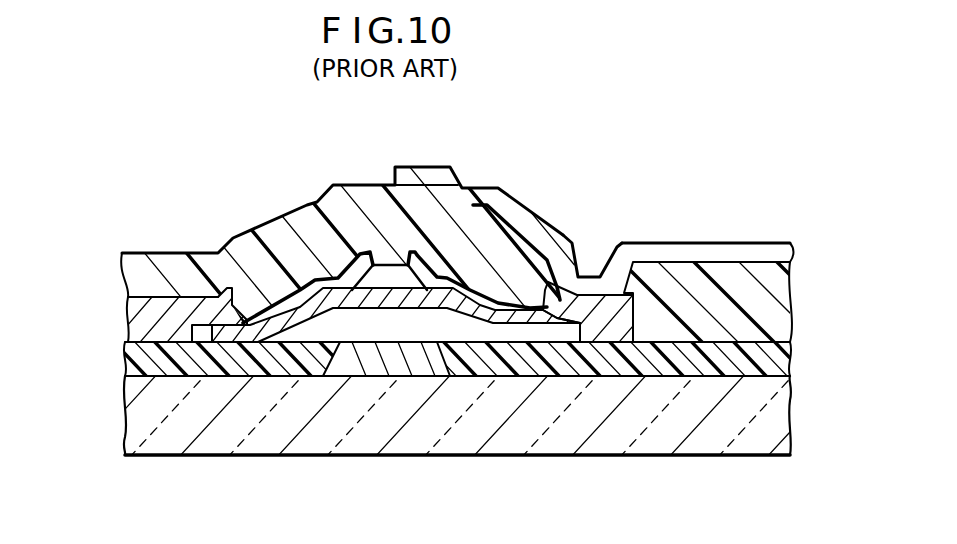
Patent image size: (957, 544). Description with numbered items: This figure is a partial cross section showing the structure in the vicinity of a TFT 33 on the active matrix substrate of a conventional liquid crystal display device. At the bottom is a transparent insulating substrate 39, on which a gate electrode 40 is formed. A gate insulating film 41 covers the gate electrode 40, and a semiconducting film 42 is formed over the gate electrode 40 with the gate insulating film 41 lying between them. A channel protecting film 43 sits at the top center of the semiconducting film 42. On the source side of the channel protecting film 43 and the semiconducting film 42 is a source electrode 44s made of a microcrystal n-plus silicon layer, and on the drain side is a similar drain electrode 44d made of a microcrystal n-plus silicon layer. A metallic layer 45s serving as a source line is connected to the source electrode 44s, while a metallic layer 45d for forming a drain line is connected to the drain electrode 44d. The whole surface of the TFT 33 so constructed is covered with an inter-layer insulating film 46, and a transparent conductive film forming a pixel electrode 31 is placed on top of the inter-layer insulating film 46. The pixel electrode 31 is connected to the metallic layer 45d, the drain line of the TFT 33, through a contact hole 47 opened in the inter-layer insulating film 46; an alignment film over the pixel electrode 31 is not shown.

The pixel electrode 31 is at (723, 250).
The TFT 33 is at (313, 190).
The transparent insulating substrate 39 is at (770, 427).
The gate electrode 40 is at (392, 350).
The gate insulating film 41 is at (790, 355).
The semiconducting film 42 is at (277, 297).
The channel protecting film 43 is at (382, 272).
The source electrode 44s is at (243, 233).
The drain electrode 44d is at (493, 307).
The metallic layer serving as a source line 45s is at (133, 337).
The metallic layer for forming a drain line 45d is at (600, 335).
The inter-layer insulating film 46 is at (133, 263).
The contact hole 47 is at (597, 268).